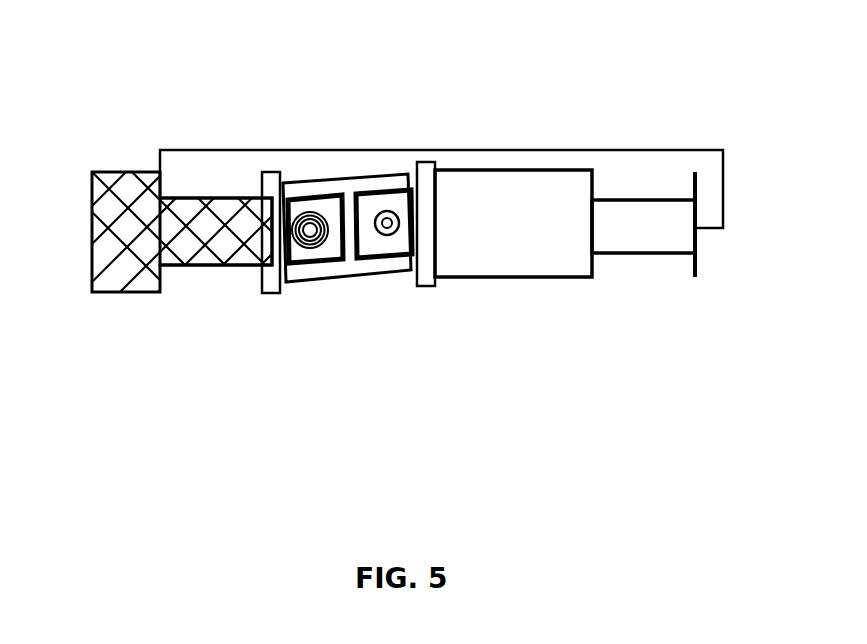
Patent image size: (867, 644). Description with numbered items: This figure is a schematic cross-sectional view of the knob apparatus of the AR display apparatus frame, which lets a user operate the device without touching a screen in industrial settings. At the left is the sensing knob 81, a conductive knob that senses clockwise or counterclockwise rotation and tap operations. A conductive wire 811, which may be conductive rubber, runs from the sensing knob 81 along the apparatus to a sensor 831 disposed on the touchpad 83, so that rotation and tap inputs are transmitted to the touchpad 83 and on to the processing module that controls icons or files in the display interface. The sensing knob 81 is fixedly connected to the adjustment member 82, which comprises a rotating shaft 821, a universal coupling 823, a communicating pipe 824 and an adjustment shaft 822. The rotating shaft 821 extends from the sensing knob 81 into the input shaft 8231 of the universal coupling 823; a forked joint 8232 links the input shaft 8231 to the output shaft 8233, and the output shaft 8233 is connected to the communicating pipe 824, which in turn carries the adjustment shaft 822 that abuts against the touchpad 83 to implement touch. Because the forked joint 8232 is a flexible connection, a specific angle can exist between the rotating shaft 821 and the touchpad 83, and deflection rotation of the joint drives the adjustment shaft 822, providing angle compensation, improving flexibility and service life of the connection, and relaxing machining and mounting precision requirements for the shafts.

The sensing knob 81 is at (236, 261).
The conductive wire 811 is at (425, 140).
The rotating shaft 821 is at (212, 275).
The adjustment member 82 is at (435, 252).
The universal coupling 823 is at (347, 191).
The input shaft 8231 is at (251, 206).
The forked joint 8232 is at (372, 186).
The output shaft 8233 is at (456, 197).
The communicating pipe 824 is at (497, 271).
The adjustment shaft 822 is at (621, 276).
The touchpad 83 is at (664, 287).
The sensor 831 is at (738, 249).